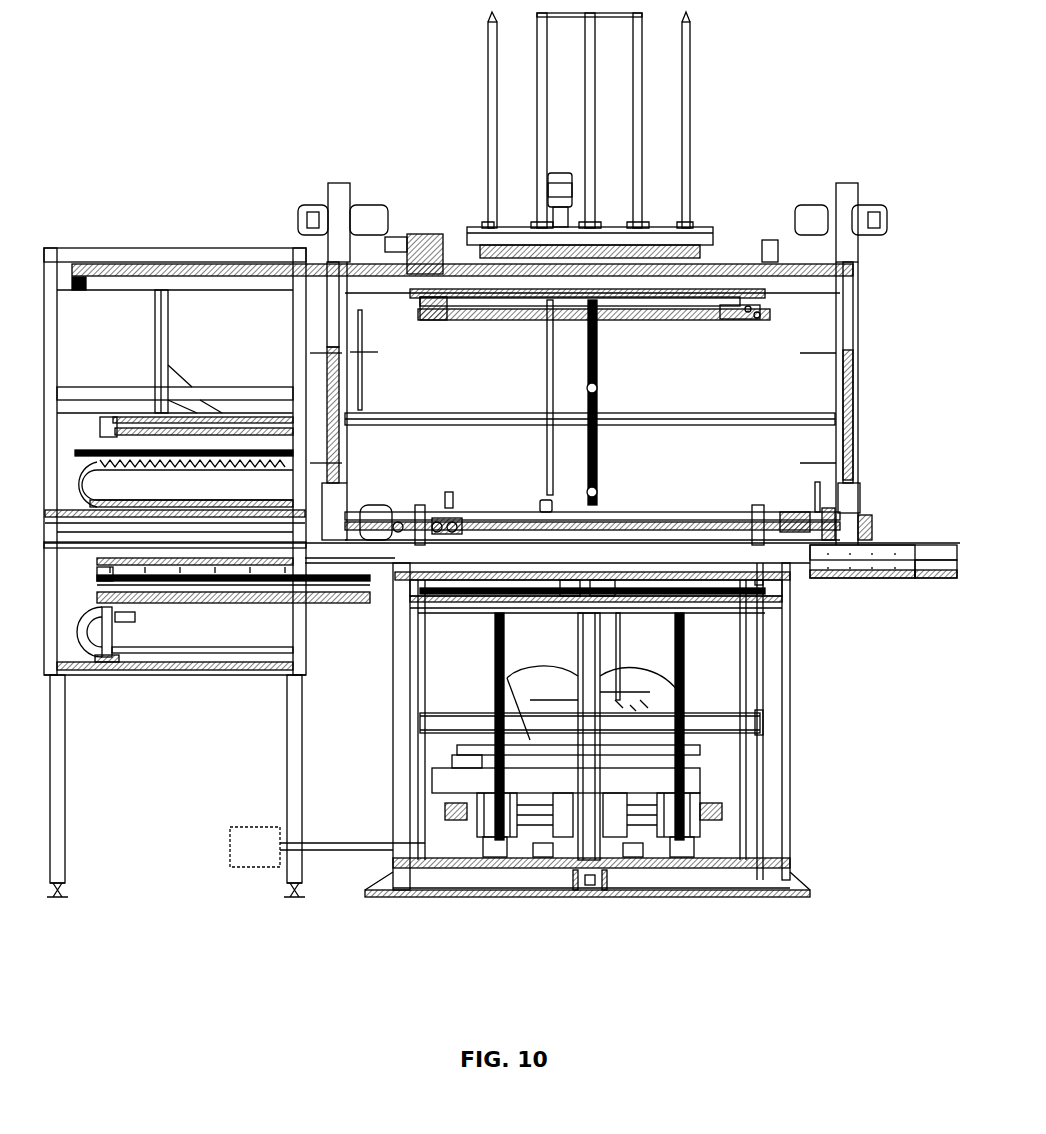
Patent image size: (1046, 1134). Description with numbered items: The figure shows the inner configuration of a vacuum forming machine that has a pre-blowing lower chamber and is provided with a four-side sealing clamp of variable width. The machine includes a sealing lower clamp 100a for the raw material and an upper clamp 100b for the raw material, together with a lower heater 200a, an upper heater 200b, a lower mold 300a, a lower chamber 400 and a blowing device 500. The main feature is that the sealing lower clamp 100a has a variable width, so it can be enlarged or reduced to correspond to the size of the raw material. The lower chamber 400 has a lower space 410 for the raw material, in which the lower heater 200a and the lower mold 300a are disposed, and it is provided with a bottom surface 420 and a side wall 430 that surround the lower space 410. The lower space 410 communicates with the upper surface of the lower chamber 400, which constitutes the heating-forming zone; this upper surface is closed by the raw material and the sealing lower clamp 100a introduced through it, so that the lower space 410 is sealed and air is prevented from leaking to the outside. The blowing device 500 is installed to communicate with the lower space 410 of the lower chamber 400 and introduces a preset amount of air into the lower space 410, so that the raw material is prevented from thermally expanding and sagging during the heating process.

The upper heater 200b is at (91, 446).
The lower heater 200a is at (162, 615).
The upper clamp 100b is at (770, 318).
The sealing lower clamp 100a is at (703, 525).
The lower space 410 is at (740, 652).
The lower mold 300a is at (625, 692).
The side wall 430 is at (777, 770).
The lower chamber 400 is at (802, 831).
The bottom surface 420 is at (703, 878).
The blowing device 500 is at (254, 857).